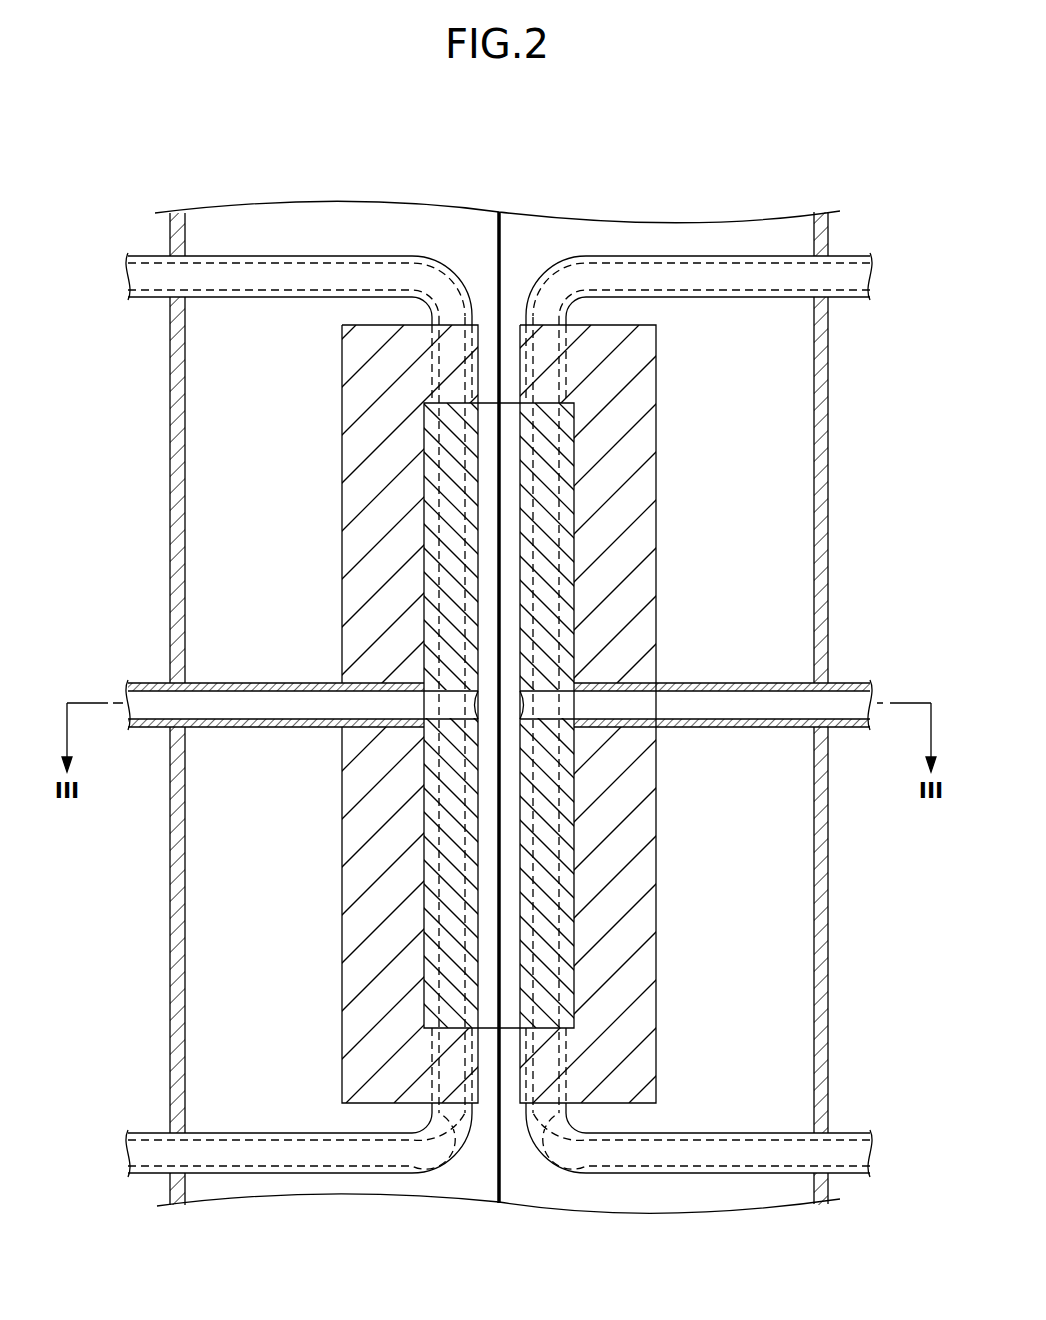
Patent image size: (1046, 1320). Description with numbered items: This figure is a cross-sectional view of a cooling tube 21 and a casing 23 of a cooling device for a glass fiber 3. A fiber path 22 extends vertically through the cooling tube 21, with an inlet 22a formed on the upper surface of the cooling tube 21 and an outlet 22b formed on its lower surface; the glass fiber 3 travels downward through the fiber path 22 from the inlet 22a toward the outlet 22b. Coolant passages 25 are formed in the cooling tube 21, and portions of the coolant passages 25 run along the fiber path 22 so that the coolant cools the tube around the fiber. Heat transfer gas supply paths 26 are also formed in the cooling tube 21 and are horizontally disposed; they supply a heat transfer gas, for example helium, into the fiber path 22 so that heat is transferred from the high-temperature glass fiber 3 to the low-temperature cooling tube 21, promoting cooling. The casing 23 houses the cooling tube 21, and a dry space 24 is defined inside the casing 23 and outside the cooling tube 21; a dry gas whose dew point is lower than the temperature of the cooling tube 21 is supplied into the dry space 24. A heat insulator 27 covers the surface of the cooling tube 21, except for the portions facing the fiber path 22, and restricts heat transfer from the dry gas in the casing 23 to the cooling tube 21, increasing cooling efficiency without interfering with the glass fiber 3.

The glass fiber 3 is at (499, 245).
The cooling tube 21 is at (572, 570).
The fiber path 22 is at (513, 454).
The inlet 22a is at (519, 404).
The outlet 22b is at (513, 1030).
The casing 23 is at (818, 433).
The dry space 24 is at (268, 560).
The coolant passage 25 is at (547, 538).
The heat transfer gas supply path 26 is at (568, 697).
The heat insulator 27 is at (643, 998).